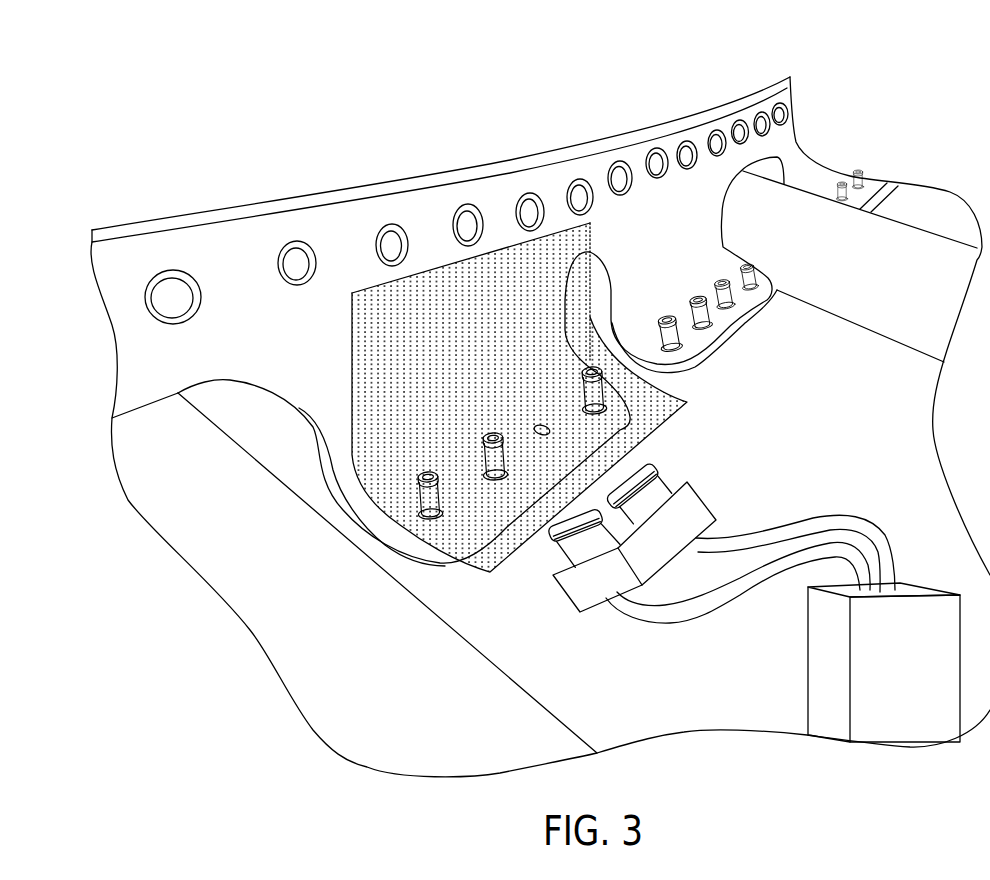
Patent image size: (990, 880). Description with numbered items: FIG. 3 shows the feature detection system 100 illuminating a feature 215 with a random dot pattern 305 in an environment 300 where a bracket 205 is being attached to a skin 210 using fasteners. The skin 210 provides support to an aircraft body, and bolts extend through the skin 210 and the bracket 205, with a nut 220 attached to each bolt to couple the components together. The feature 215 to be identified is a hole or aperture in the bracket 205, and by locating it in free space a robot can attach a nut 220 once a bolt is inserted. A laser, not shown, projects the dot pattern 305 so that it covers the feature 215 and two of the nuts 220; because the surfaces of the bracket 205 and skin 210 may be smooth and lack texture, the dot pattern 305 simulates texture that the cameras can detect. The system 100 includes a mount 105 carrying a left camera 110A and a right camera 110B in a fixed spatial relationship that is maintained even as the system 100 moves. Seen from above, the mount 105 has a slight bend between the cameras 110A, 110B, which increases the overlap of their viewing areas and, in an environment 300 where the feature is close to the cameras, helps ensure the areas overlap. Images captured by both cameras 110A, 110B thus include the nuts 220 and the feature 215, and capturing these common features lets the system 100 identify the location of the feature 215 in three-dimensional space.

The feature detection system 100 is at (923, 667).
The mount 105 is at (693, 481).
The left camera 110A is at (548, 532).
The right camera 110B is at (660, 472).
The bracket 205 is at (648, 124).
The skin 210 is at (860, 447).
The feature 215 is at (534, 430).
The nut 220 is at (584, 370).
The environment 300 is at (300, 98).
The random dot pattern 305 is at (352, 323).